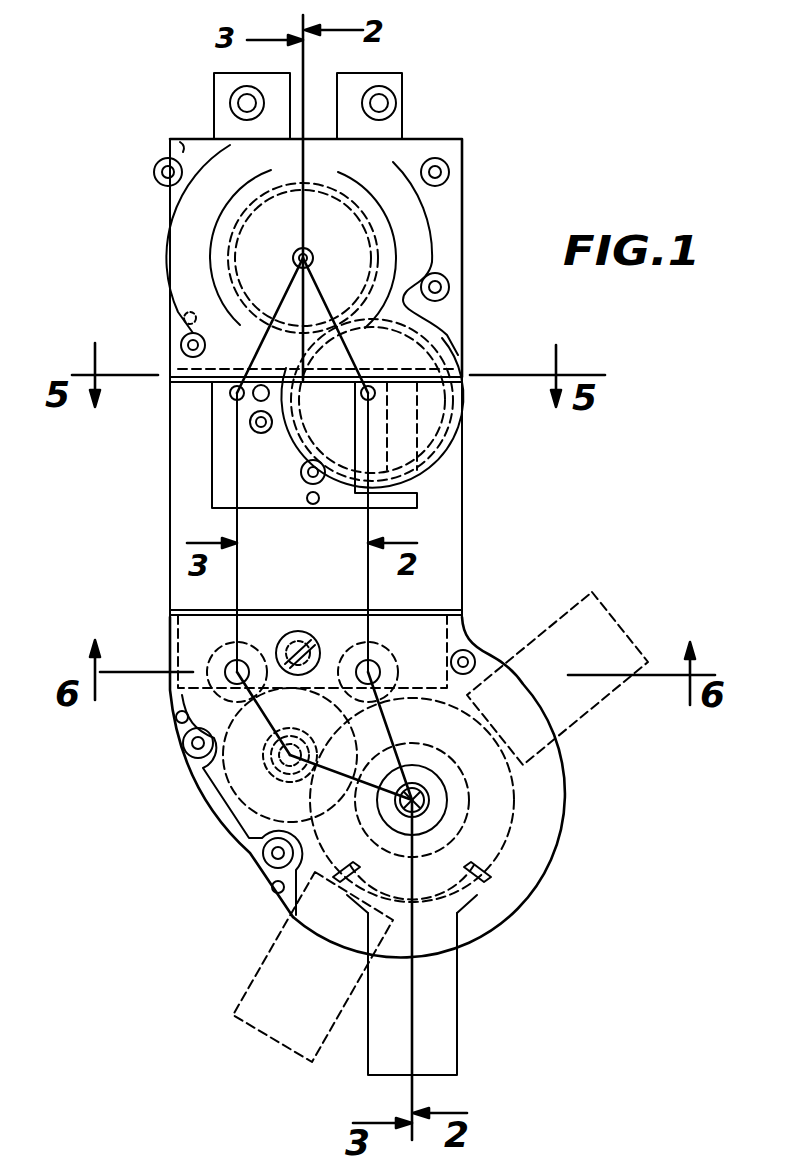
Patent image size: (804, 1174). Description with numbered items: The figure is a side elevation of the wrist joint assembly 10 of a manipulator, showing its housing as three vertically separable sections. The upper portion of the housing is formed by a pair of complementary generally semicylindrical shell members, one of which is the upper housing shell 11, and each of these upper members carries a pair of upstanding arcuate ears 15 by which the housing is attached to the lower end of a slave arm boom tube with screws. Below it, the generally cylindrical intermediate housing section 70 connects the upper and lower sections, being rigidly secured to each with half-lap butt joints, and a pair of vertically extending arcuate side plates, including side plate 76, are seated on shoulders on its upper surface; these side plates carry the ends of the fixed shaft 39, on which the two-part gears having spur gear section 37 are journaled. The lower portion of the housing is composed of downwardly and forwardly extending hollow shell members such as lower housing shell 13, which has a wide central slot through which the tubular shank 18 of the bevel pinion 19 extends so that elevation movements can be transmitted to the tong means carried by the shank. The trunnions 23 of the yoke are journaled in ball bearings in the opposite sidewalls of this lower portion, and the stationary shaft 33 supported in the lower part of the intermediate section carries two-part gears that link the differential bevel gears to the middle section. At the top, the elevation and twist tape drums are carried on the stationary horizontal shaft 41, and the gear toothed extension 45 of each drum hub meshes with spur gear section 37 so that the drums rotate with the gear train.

The wrist joint assembly 10 is at (472, 546).
The upper housing shell member 11 is at (450, 210).
The lower housing shell member 13 is at (547, 760).
The upstanding arcuate ears 15 is at (395, 62).
The tubular shank 18 is at (452, 1023).
The bevel pinion 19 is at (555, 880).
The trunnions 23 is at (420, 806).
The stationary shaft 33 is at (455, 635).
The spur gear section 37 is at (433, 340).
The fixed shaft 39 is at (375, 393).
The stationary horizontal shaft 41 is at (295, 258).
The gear toothed extension 45 is at (377, 245).
The intermediate housing section 70 is at (170, 522).
The arcuate side plate 76 is at (215, 460).